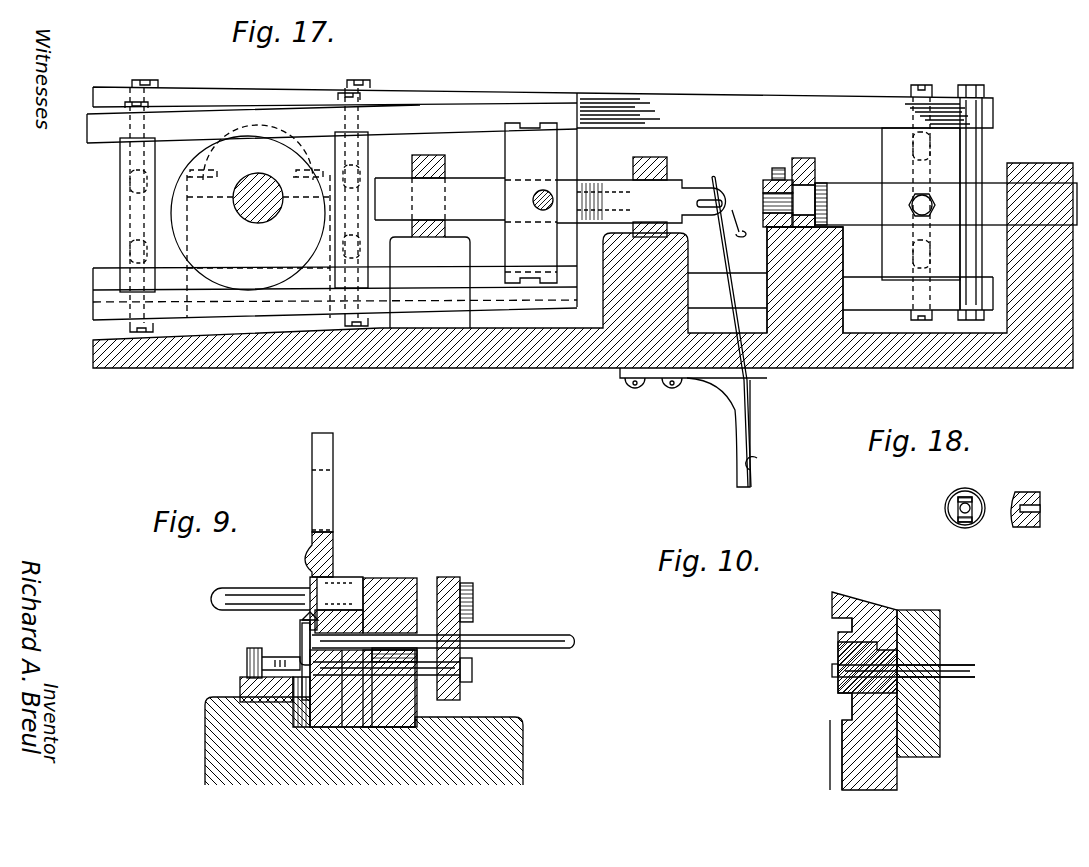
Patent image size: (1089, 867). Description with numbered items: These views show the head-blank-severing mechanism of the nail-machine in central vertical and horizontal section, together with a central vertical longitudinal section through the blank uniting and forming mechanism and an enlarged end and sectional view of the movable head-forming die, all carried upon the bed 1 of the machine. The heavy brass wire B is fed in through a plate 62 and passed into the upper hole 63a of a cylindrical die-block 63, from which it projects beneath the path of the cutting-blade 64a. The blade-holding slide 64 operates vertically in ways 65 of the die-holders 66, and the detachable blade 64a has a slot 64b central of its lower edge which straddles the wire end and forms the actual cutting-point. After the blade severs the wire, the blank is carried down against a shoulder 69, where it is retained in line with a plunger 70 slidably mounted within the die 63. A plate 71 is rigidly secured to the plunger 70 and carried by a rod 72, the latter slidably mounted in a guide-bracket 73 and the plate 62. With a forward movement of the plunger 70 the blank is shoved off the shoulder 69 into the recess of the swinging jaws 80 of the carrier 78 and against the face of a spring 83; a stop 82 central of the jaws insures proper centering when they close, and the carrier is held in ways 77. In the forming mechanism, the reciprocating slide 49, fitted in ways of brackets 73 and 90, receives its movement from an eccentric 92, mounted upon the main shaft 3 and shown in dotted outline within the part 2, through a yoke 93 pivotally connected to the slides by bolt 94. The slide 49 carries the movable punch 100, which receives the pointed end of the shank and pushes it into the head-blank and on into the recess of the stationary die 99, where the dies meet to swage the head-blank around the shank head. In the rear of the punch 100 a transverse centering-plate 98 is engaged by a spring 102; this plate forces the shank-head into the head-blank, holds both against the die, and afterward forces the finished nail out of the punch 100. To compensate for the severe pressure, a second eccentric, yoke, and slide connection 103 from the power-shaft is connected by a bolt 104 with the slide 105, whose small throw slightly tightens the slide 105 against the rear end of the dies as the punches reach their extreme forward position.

In FIG. 17, the base 1 is at (547, 368).
In FIG. 17, the chuck body 2 is at (258, 221).
In FIG. 17, the spindle 3 is at (257, 214).
In FIG. 17, the eccentric 92 is at (248, 213).
In FIG. 17, the yoke 93 is at (332, 197).
In FIG. 17, the second eccentric, yoke, and slide connection 103 is at (785, 110).
In FIG. 17, the slide 49 is at (440, 199).
In FIG. 17, the bracket 90 is at (420, 167).
In FIG. 17, the bolt 94 is at (545, 208).
In FIG. 17, the guide-bracket 73 is at (650, 186).
In FIG. 17, the spring 102 is at (725, 276).
In FIG. 17, the transverse centering-plate 98 is at (726, 321).
In FIG. 17, the movable punch 100 is at (724, 204).
In FIG. 18, the movable punch 100 is at (1011, 496).
In FIG. 17, the stationary die 99 is at (763, 195).
In FIG. 17, the die-holders 66 is at (776, 167).
In FIG. 9, the die-holders 66 is at (357, 715).
In FIG. 10, the die-holders 66 is at (872, 602).
In FIG. 17, the plate 62 is at (806, 160).
In FIG. 9, the plate 62 is at (405, 580).
In FIG. 10, the plate 62 is at (935, 645).
In FIG. 17, the slide 105 is at (946, 204).
In FIG. 17, the bolt 104 is at (925, 192).
In FIG. 17, the ways 77 is at (766, 232).
In FIG. 10, the ways 77 is at (832, 765).
In FIG. 9, the lever 64 is at (333, 449).
In FIG. 9, the rod 72 is at (260, 589).
In FIG. 9, the cutting-blade 64a is at (308, 588).
In FIG. 9, the slot 64b is at (300, 633).
In FIG. 9, the carrier 78 is at (305, 620).
In FIG. 9, the swinging jaws 80 is at (303, 660).
In FIG. 9, the upper hole 63a is at (332, 625).
In FIG. 9, the cylindrical die-block 63 is at (347, 718).
In FIG. 10, the cylindrical die-block 63 is at (838, 688).
In FIG. 9, the ways 65 is at (330, 710).
In FIG. 10, the ways 65 is at (848, 627).
In FIG. 9, the shoulder 69 is at (305, 658).
In FIG. 10, the shoulder 69 is at (830, 670).
In FIG. 9, the plunger 70 is at (424, 662).
In FIG. 10, the plunger 70 is at (945, 677).
In FIG. 9, the plate 71 is at (462, 688).
In FIG. 9, the spring 83 is at (247, 664).
In FIG. 9, the stop 82 is at (240, 688).
In FIG. 9, the brass wire B is at (545, 634).